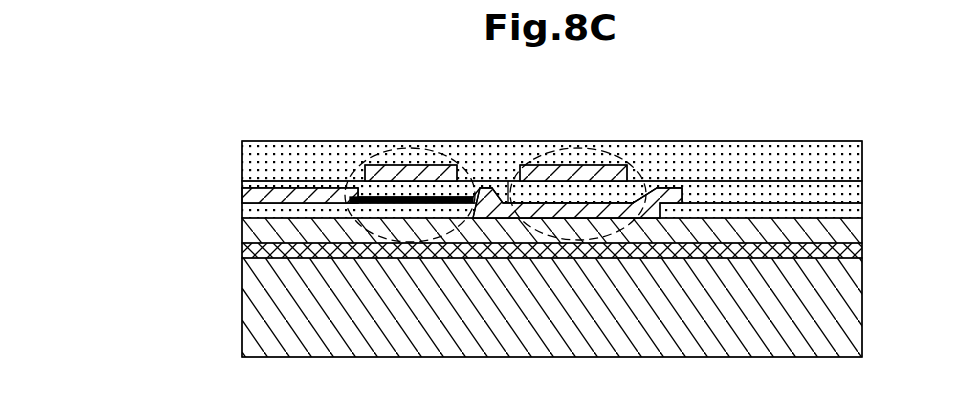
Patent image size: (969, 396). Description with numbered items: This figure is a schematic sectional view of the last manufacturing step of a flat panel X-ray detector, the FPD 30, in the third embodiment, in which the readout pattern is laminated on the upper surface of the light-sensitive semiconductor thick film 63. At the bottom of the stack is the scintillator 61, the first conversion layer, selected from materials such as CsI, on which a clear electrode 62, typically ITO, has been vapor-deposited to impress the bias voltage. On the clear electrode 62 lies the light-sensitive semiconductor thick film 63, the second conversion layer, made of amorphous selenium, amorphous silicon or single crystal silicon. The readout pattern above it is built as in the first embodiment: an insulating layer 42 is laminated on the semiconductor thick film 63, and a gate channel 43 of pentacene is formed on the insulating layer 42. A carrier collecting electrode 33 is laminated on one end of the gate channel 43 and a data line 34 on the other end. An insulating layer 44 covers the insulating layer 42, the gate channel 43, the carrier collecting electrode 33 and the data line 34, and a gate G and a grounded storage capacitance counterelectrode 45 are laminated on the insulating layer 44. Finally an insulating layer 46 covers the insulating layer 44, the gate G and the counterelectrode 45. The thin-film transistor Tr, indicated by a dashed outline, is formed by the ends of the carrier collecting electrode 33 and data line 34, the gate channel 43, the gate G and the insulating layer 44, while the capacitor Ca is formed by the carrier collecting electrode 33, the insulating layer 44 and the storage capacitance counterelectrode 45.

The FPD 30 is at (180, 181).
The insulating layer 46 is at (248, 151).
The insulating layer 44 is at (848, 192).
The insulating layer 42 is at (256, 210).
The light-sensitive semiconductor thick film 63 is at (256, 224).
The clear electrode 62 is at (256, 247).
The scintillator 61 is at (256, 300).
The data line 34 is at (256, 192).
The gate channel 43 is at (463, 197).
The carrier collecting electrode 33 is at (687, 195).
The gate G is at (410, 165).
The storage capacitance counterelectrode 45 is at (548, 165).
The thin-film transistor Tr is at (372, 150).
The capacitor Ca is at (575, 148).